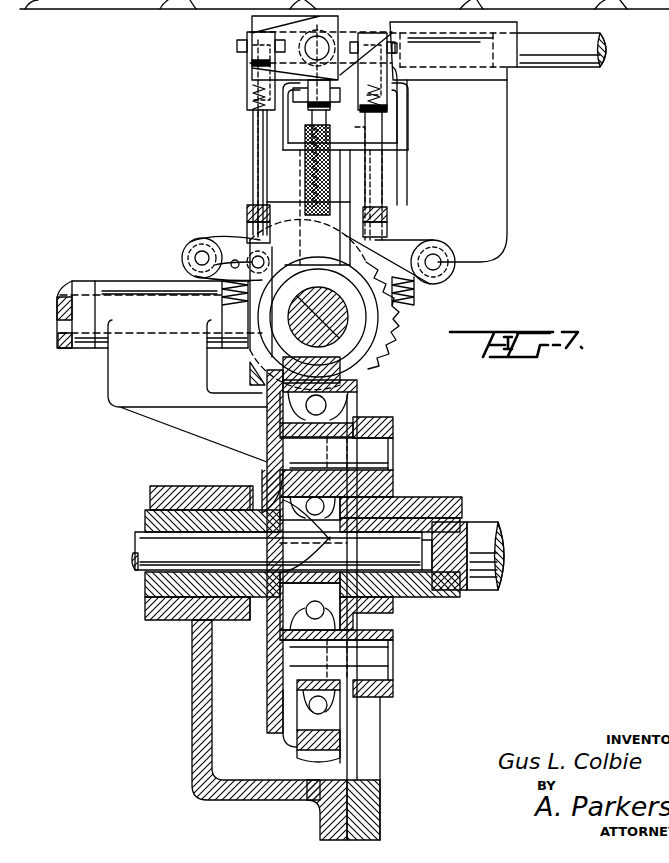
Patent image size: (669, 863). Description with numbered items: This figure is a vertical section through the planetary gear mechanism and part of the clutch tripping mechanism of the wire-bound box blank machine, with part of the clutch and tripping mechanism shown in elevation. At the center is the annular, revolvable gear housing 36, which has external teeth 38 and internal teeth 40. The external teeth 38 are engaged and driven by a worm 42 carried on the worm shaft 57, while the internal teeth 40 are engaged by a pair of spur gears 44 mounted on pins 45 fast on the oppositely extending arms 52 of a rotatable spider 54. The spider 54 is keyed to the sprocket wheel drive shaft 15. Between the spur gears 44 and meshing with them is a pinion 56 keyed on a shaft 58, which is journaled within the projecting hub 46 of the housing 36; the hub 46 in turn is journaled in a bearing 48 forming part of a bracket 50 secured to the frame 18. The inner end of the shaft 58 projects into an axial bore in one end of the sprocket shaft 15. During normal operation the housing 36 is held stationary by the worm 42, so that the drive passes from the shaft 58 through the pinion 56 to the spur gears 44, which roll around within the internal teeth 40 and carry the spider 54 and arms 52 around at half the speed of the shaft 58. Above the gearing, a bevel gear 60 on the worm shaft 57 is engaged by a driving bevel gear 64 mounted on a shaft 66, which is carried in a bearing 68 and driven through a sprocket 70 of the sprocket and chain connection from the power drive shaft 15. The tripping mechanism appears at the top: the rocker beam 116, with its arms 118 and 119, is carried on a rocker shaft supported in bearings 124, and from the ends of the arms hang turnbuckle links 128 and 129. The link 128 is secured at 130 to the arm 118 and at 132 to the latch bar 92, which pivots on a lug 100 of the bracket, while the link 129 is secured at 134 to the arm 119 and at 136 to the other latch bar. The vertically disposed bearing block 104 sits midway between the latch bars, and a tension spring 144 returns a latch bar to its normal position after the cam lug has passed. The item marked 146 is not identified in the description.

The sprocket wheel drive shaft 15 is at (483, 590).
The frame member 18 is at (382, 803).
The gear housing 36 is at (268, 421).
The external teeth 38 is at (307, 763).
The internal teeth 40 is at (338, 724).
The worm 42 is at (386, 336).
The spur gears 44 is at (338, 405).
The pins 45 is at (388, 456).
The hub 46 is at (150, 521).
The bearing 48 is at (212, 480).
The bracket 50 is at (255, 798).
The arms 52 is at (385, 426).
The spider 54 is at (410, 494).
The pinion 56 is at (281, 500).
The worm shaft 57 is at (332, 318).
The shaft 58 is at (146, 543).
The bevel gear 60 is at (378, 352).
The driving bevel gear 64 is at (262, 372).
The shaft 66 is at (57, 320).
The bearing 68 is at (125, 282).
The sprocket 70 is at (73, 282).
The latch bar 92 is at (240, 274).
The lug 100 is at (232, 262).
The bearing block 104 is at (290, 163).
The rocker beam 116 is at (248, 23).
The arm 118 is at (256, 23).
The arm 119 is at (345, 28).
The bearings 124 is at (250, 30).
The turnbuckle link 128 is at (260, 190).
The turnbuckle link 129 is at (380, 176).
The securing point 130 is at (240, 55).
The securing point 132 is at (255, 240).
The securing point 134 is at (410, 62).
The securing point 136 is at (392, 237).
The tension spring 144 is at (414, 302).
The spring 146 is at (222, 300).